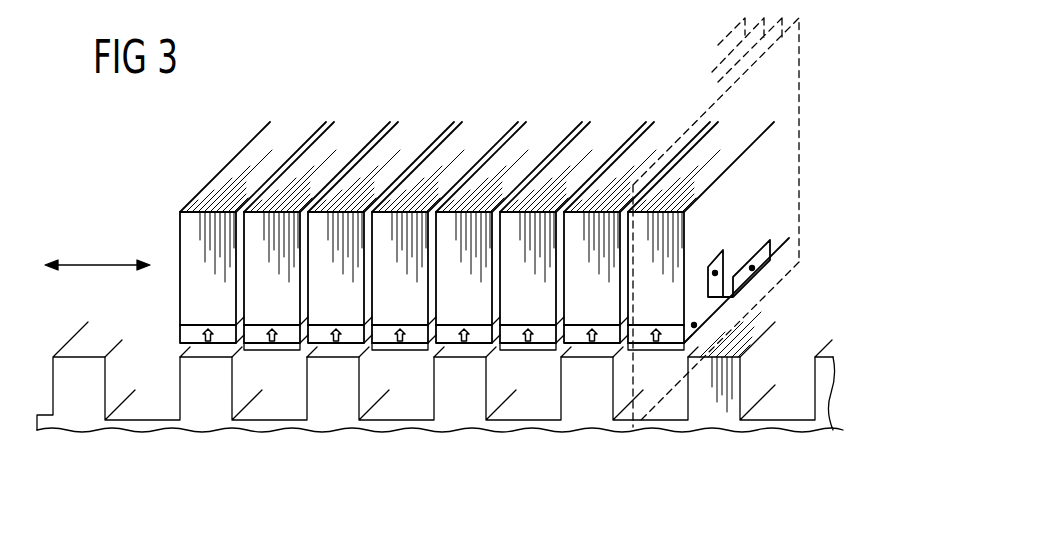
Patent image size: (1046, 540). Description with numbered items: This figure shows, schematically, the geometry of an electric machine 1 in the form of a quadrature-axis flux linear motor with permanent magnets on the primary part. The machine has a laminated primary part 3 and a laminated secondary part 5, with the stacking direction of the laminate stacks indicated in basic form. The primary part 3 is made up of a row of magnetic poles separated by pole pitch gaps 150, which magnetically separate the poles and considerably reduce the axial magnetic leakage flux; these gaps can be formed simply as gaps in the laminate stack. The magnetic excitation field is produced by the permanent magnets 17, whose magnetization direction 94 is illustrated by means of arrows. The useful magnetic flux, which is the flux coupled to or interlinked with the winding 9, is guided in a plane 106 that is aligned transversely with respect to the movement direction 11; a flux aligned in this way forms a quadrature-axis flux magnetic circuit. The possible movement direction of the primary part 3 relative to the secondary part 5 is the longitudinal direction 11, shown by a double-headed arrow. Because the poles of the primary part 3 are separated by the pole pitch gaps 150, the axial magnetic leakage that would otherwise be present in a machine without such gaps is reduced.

The electric machine 1 is at (186, 156).
The primary part 3 is at (708, 211).
The secondary part 5 is at (792, 352).
The winding 9 is at (729, 266).
The movement direction 11 is at (100, 262).
The permanent magnets 17 is at (195, 336).
The magnetization direction 94 is at (207, 324).
The plane 106 is at (724, 44).
The pole pitch gaps 150 is at (495, 138).